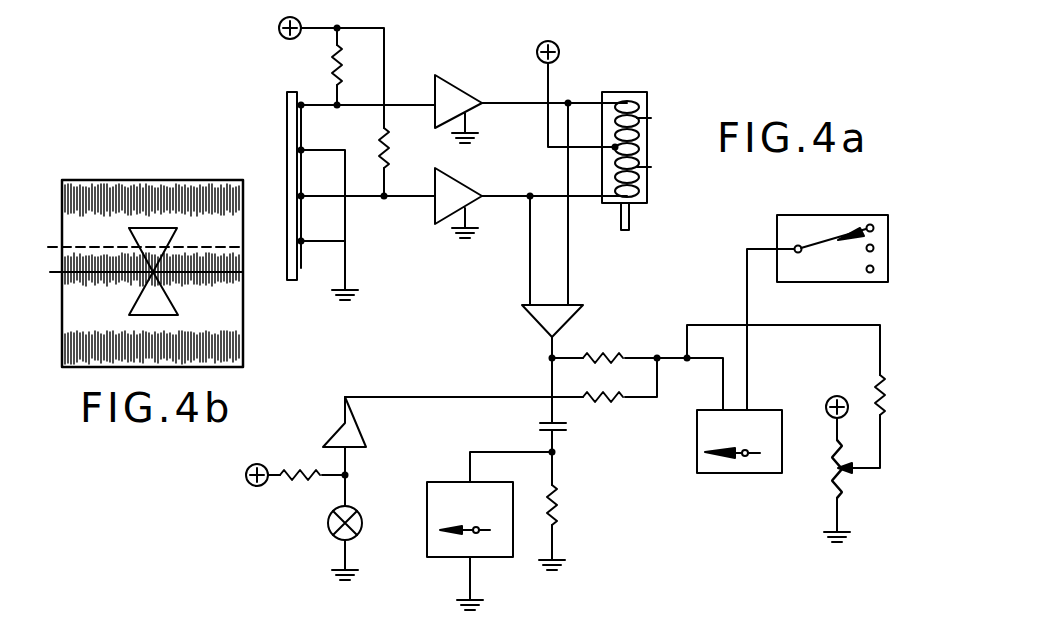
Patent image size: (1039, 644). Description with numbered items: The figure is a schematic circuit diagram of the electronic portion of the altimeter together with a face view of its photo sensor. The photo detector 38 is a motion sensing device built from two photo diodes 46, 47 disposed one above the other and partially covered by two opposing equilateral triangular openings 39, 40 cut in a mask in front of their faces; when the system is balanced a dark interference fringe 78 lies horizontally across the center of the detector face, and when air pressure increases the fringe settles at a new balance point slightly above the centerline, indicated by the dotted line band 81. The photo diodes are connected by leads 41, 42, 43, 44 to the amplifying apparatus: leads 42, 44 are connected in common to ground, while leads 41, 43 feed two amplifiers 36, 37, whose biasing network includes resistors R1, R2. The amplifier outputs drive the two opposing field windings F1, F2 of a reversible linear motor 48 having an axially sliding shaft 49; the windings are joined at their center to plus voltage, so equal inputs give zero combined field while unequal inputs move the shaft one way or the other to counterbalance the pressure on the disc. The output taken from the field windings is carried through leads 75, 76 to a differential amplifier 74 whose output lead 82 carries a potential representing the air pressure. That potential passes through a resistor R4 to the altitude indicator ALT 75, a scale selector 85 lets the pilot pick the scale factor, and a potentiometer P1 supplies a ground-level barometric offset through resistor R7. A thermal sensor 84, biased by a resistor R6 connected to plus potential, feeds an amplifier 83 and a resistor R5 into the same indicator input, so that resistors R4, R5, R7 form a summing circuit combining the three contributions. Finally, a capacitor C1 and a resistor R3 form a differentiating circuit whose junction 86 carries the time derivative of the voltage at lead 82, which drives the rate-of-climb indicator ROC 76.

In FIG. 4a, the photo detector 38 is at (285, 95).
In FIG. 4b, the photo detector 38 is at (115, 178).
In FIG. 4a, the photo diode 46 is at (302, 97).
In FIG. 4a, the lead 41 is at (360, 107).
In FIG. 4a, the lead 42 is at (322, 150).
In FIG. 4a, the lead 43 is at (324, 192).
In FIG. 4a, the lead 44 is at (320, 240).
In FIG. 4a, the photo diode 47 is at (303, 268).
In FIG. 4a, the resistor R1 is at (351, 65).
In FIG. 4a, the resistor R2 is at (399, 148).
In FIG. 4a, the amplifier 36 is at (447, 83).
In FIG. 4a, the amplifier 37 is at (476, 190).
In FIG. 4a, the reversible linear motor 48 is at (619, 90).
In FIG. 4a, the field winding F1 is at (656, 118).
In FIG. 4a, the field winding F2 is at (656, 168).
In FIG. 4a, the sliding shaft 49 is at (629, 222).
In FIG. 4a, the lead / rate-of-climb indicator ROC 76 is at (530, 243).
In FIG. 4a, the lead / altitude indicator ALT 75 is at (571, 273).
In FIG. 4a, the differential amplifier 74 is at (530, 318).
In FIG. 4a, the output lead 82 is at (550, 348).
In FIG. 4a, the resistor R4 is at (637, 366).
In FIG. 4a, the resistor R5 is at (501, 392).
In FIG. 4a, the capacitor C1 is at (562, 433).
In FIG. 4a, the resistor R3 is at (568, 511).
In FIG. 4a, the junction 86 is at (494, 455).
In FIG. 4a, the amplifier 83 is at (360, 437).
In FIG. 4a, the thermal sensor 84 is at (360, 513).
In FIG. 4a, the resistor R6 is at (306, 490).
In FIG. 4a, the scale selector 85 is at (827, 215).
In FIG. 4a, the resistor R7 is at (881, 424).
In FIG. 4a, the potentiometer P1 is at (852, 480).
In FIG. 4b, the dark interference fringe 78 is at (102, 283).
In FIG. 4b, the dotted line band 81 is at (50, 272).
In FIG. 4b, the equilateral triangular opening 39 is at (130, 234).
In FIG. 4b, the equilateral triangular opening 40 is at (172, 306).